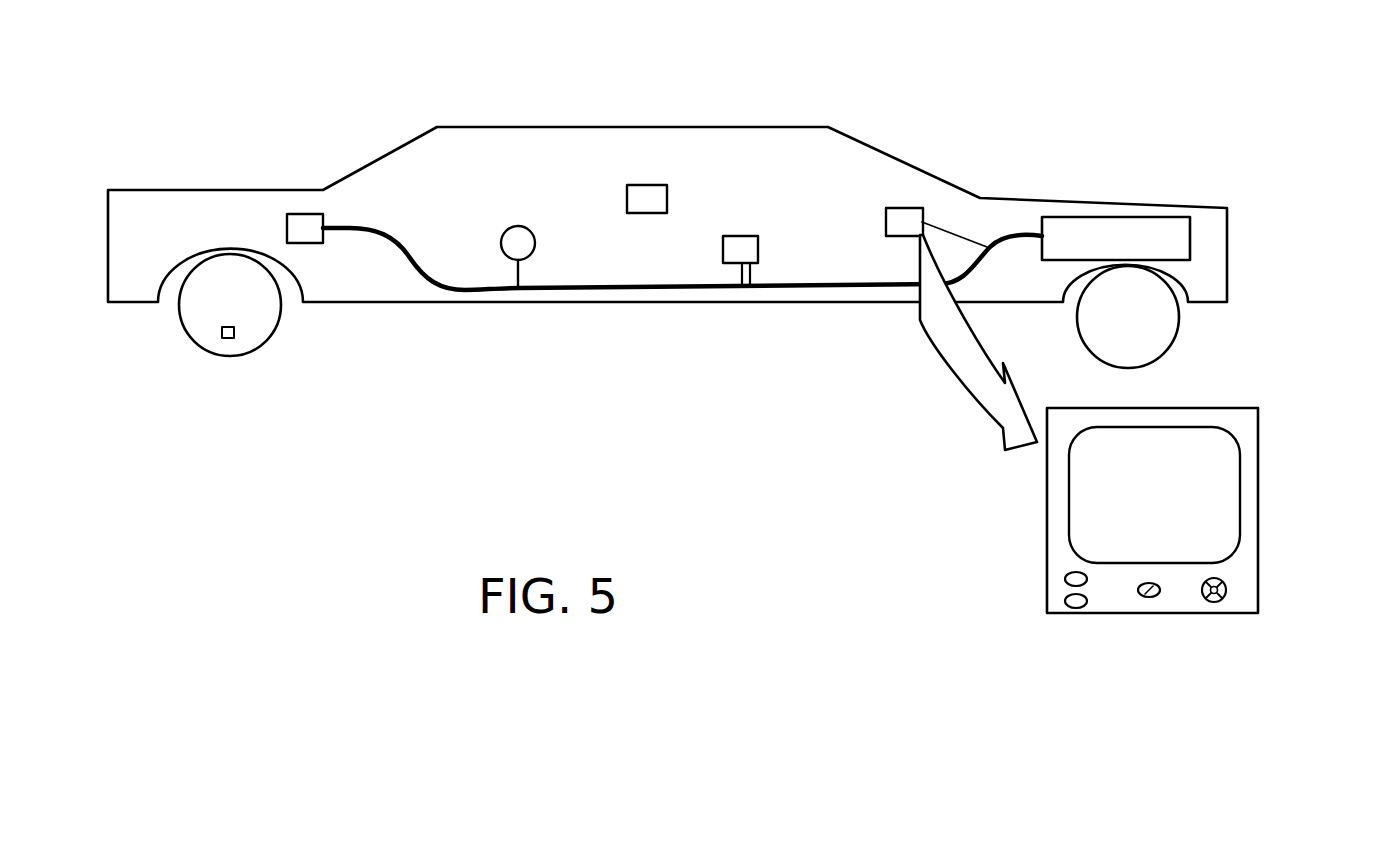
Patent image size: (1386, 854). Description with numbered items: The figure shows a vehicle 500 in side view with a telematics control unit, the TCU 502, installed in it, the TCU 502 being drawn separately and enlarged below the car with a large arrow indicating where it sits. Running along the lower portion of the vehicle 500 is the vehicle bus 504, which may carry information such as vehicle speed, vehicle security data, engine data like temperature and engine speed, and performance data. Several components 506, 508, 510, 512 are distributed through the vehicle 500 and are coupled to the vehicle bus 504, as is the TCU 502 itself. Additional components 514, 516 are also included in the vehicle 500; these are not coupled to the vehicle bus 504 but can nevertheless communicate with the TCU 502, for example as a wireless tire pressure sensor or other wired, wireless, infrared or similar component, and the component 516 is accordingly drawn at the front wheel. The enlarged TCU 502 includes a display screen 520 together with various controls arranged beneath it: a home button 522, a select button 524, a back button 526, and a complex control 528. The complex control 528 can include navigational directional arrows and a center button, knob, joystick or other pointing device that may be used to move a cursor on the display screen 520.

The vehicle 500 is at (848, 76).
The TCU 502 is at (1150, 552).
The vehicle bus 504 is at (422, 282).
The component 506 is at (307, 220).
The component 508 is at (535, 257).
The component 510 is at (750, 263).
The component 512 is at (1190, 237).
The additional component 514 is at (650, 186).
The additional component 516 is at (230, 338).
The display screen 520 is at (1240, 532).
The home button 522 is at (1065, 578).
The select button 524 is at (1074, 608).
The back button 526 is at (1143, 596).
The complex control 528 is at (1215, 603).